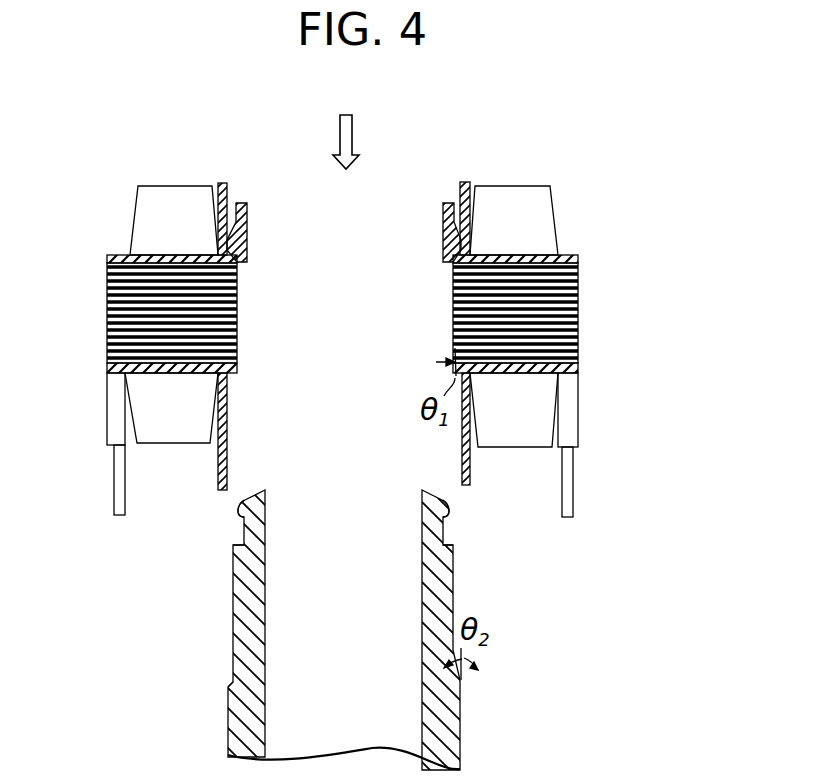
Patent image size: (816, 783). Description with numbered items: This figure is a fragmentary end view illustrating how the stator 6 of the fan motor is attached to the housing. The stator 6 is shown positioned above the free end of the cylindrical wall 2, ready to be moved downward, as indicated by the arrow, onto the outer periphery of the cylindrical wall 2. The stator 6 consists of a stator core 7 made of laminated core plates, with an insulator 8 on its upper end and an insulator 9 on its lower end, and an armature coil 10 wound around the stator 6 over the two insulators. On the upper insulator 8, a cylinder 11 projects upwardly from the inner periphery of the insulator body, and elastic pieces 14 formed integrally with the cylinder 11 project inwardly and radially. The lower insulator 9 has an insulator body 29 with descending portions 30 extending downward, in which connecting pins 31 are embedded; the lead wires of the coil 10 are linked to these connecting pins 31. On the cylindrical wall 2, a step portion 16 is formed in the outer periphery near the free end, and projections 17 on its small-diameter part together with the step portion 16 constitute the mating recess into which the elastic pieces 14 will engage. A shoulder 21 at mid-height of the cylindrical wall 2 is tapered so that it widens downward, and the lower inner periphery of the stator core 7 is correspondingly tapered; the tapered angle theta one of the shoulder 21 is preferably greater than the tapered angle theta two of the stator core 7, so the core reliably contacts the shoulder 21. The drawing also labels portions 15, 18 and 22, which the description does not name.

The cylindrical wall 2 is at (346, 630).
The stator 6 is at (599, 280).
The stator core 7 is at (560, 332).
The insulator 8 is at (524, 256).
The insulator 9 is at (107, 411).
The armature coil 10 is at (540, 401).
The cylinder 11 is at (470, 181).
The elastic pieces 14 is at (249, 211).
The tube wall 15 is at (228, 705).
The step portion 16 is at (448, 546).
The projections 17 is at (240, 507).
The step portion 18 is at (233, 545).
The shoulder 21 is at (232, 678).
The lower flange 22 is at (236, 356).
The insulator body 29 is at (505, 378).
The descending portions 30 is at (570, 424).
The connecting pins 31 is at (118, 496).